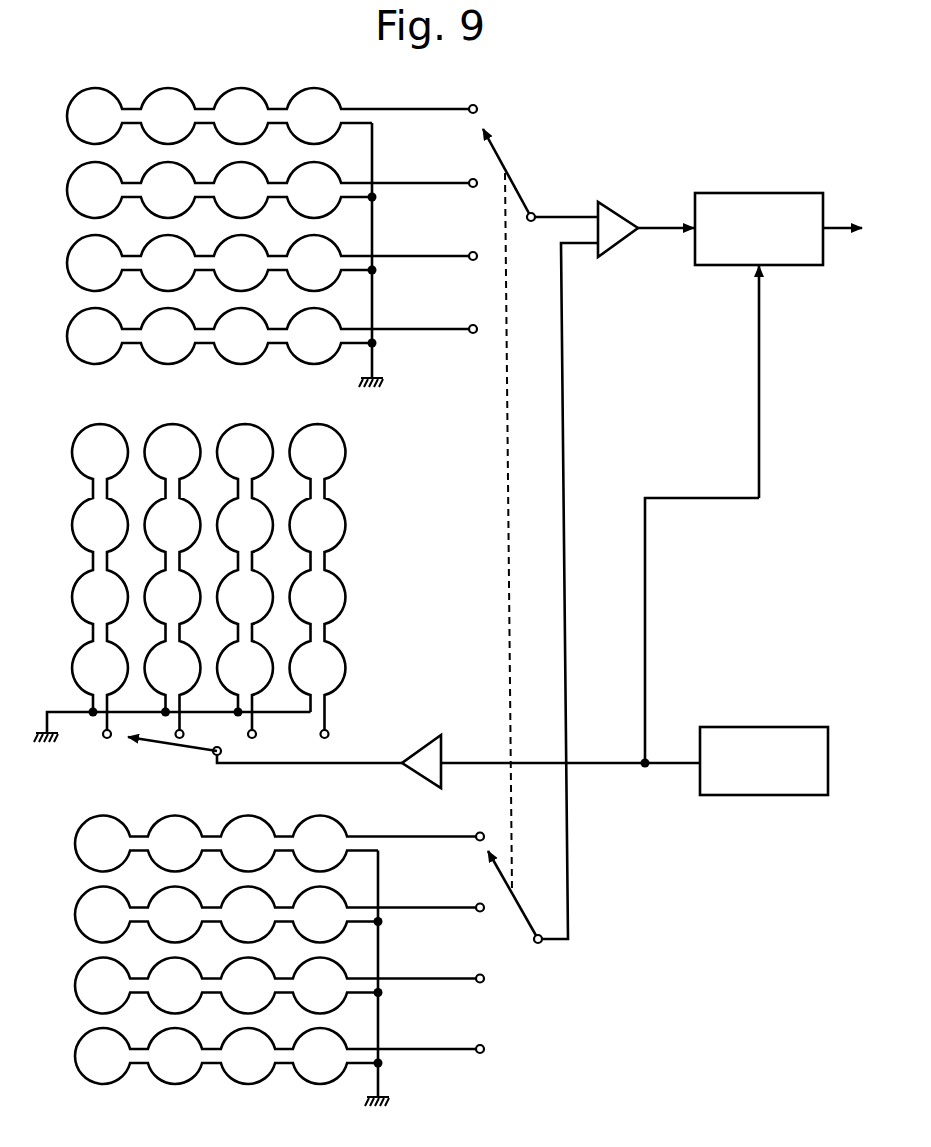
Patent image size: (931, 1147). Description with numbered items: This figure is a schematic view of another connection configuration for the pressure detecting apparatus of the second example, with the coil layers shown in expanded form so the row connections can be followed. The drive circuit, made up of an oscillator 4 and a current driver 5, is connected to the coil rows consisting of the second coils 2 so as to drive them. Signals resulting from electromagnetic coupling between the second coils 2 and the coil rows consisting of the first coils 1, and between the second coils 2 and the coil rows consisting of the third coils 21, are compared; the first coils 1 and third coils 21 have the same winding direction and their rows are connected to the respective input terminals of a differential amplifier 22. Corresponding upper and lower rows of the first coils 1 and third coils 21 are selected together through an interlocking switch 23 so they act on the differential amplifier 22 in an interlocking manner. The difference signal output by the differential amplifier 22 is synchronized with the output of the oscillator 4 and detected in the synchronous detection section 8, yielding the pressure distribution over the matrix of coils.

The first coils 1 is at (92, 88).
The second coils 2 is at (80, 434).
The third coils 21 is at (75, 838).
The interlocking switch 23 is at (503, 163).
The differential amplifier 22 is at (615, 210).
The synchronous detection section 8 is at (758, 193).
The oscillator 4 is at (757, 727).
The current driver 5 is at (413, 750).